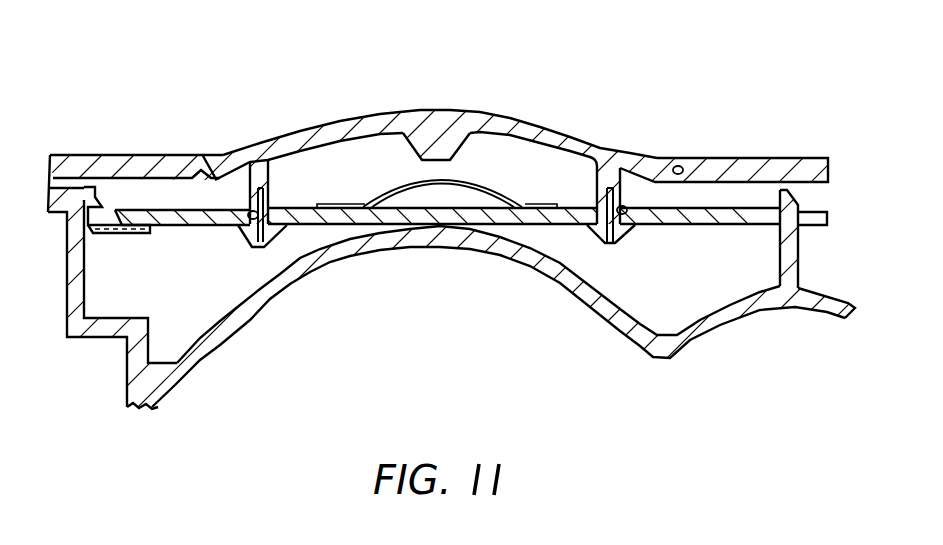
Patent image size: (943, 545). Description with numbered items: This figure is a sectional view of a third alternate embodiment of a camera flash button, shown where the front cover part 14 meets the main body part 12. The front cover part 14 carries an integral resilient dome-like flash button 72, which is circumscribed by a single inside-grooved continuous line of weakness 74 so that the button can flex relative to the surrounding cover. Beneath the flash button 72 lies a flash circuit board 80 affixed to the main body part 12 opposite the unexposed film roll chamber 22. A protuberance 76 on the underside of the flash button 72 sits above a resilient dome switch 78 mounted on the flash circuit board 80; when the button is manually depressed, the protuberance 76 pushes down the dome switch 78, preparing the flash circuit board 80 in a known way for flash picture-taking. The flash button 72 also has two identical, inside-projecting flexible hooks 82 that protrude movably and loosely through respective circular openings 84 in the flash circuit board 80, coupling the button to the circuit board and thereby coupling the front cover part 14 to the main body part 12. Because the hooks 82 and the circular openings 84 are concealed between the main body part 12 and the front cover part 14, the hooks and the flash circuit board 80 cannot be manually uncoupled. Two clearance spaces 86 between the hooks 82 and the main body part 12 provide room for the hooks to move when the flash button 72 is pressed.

The main body part 12 is at (90, 338).
The front cover part 14 is at (800, 153).
The unexposed film roll chamber 22 is at (391, 347).
The flash button 72 is at (350, 112).
The line of weakness 74 is at (199, 164).
The protuberance 76 is at (468, 148).
The resilient dome switch 78 is at (393, 190).
The flash circuit board 80 is at (745, 216).
The flexible hooks 82 is at (250, 248).
The circular openings 84 is at (248, 219).
The clearance spaces 86 is at (187, 323).